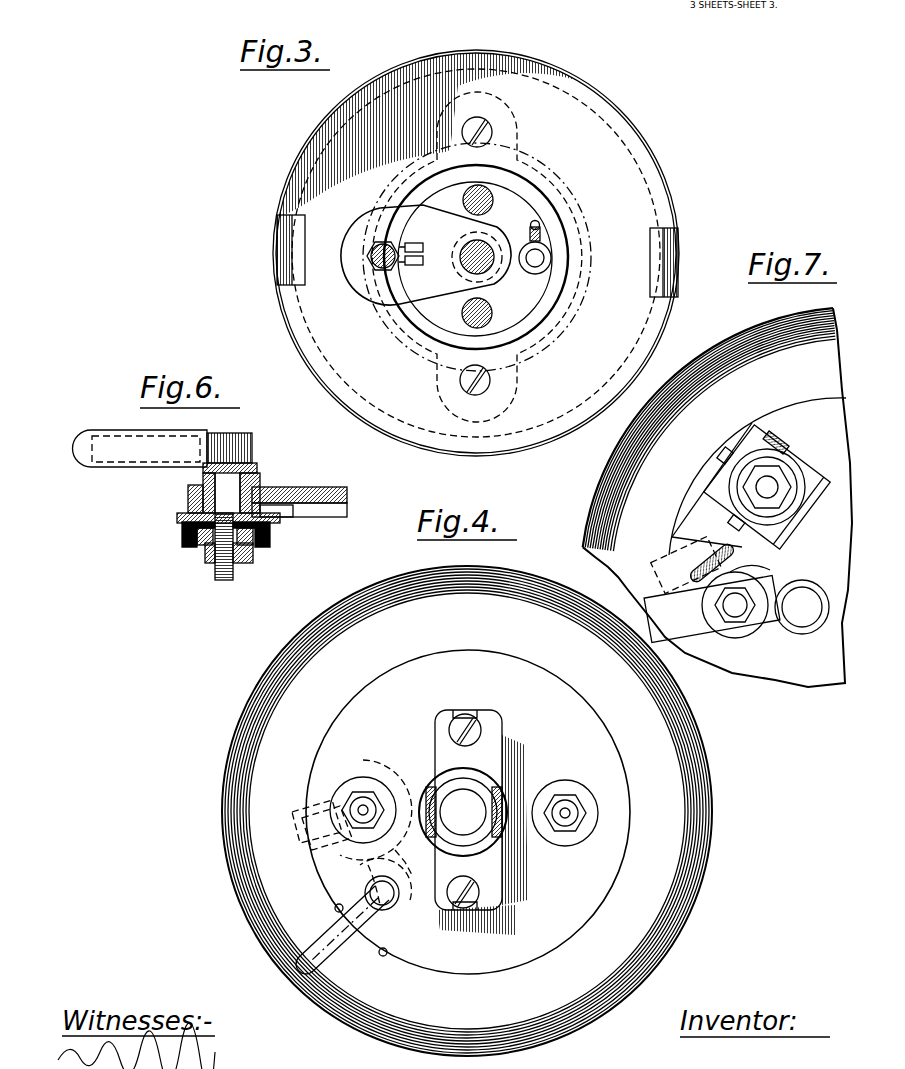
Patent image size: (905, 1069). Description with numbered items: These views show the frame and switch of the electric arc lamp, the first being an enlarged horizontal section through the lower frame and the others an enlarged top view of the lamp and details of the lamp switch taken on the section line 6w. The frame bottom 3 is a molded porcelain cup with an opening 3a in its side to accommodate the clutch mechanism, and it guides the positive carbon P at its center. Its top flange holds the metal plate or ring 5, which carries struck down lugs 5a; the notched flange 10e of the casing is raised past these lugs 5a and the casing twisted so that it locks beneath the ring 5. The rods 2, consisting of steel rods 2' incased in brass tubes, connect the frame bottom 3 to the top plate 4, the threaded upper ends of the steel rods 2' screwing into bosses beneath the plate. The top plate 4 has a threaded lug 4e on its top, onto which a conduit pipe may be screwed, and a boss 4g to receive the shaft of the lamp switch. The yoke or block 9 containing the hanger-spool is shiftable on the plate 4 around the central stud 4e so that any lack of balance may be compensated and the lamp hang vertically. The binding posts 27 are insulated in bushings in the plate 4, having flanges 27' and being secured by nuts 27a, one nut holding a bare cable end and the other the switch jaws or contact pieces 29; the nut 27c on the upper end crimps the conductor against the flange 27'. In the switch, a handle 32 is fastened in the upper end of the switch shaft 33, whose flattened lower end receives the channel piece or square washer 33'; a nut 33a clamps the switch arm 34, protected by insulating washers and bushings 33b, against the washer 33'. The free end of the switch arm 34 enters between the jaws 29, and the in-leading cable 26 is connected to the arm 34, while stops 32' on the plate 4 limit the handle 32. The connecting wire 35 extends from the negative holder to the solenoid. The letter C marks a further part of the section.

In FIG. 3, the rods 2 is at (486, 261).
In FIG. 3, the steel rods 2' is at (464, 202).
In FIG. 3, the frame bottom 3 is at (540, 311).
In FIG. 3, the opening 3a is at (426, 253).
In FIG. 6, the top plate 4 is at (300, 490).
In FIG. 7, the top plate 4 is at (821, 557).
In FIG. 4, the top plate 4 is at (467, 811).
In FIG. 4, the threaded lug 4e is at (463, 812).
In FIG. 6, the boss 4g is at (252, 480).
In FIG. 3, the metal plate or ring 5 is at (476, 253).
In FIG. 3, the struck down lugs 5a is at (294, 240).
In FIG. 3, the notched flange 10e is at (688, 262).
In FIG. 4, the yoke or block 9 is at (437, 752).
In FIG. 7, the in-leading cable 26 is at (714, 556).
In FIG. 4, the in-leading cable 26 is at (376, 809).
In FIG. 7, the binding posts 27 is at (712, 616).
In FIG. 4, the binding posts 27 is at (459, 800).
In FIG. 4, the flanges 27' is at (431, 825).
In FIG. 7, the nuts 27a is at (772, 638).
In FIG. 4, the nut 27c is at (590, 775).
In FIG. 7, the switch jaws or contact pieces 29 is at (672, 562).
In FIG. 4, the switch jaws or contact pieces 29 is at (292, 835).
In FIG. 6, the handle 32 is at (140, 460).
In FIG. 4, the handle 32 is at (351, 959).
In FIG. 4, the stops 32' is at (358, 934).
In FIG. 6, the switch shaft 33 is at (243, 506).
In FIG. 7, the switch shaft 33 is at (778, 495).
In FIG. 4, the switch shaft 33 is at (390, 896).
In FIG. 6, the channel piece or square washer 33' is at (206, 525).
In FIG. 7, the channel piece or square washer 33' is at (760, 487).
In FIG. 6, the nut 33a is at (253, 560).
In FIG. 7, the nut 33a is at (790, 462).
In FIG. 6, the insulating washers and bushings 33b is at (268, 540).
In FIG. 7, the insulating washers and bushings 33b is at (775, 440).
In FIG. 6, the switch arm 34 is at (192, 540).
In FIG. 7, the switch arm 34 is at (713, 550).
In FIG. 4, the switch arm 34 is at (348, 852).
In FIG. 3, the connecting wire or cable 35 is at (547, 244).
In FIG. 4, the section line 6w is at (388, 884).
In FIG. 3, the center contact C is at (466, 257).
In FIG. 3, the positive carbon P is at (506, 229).